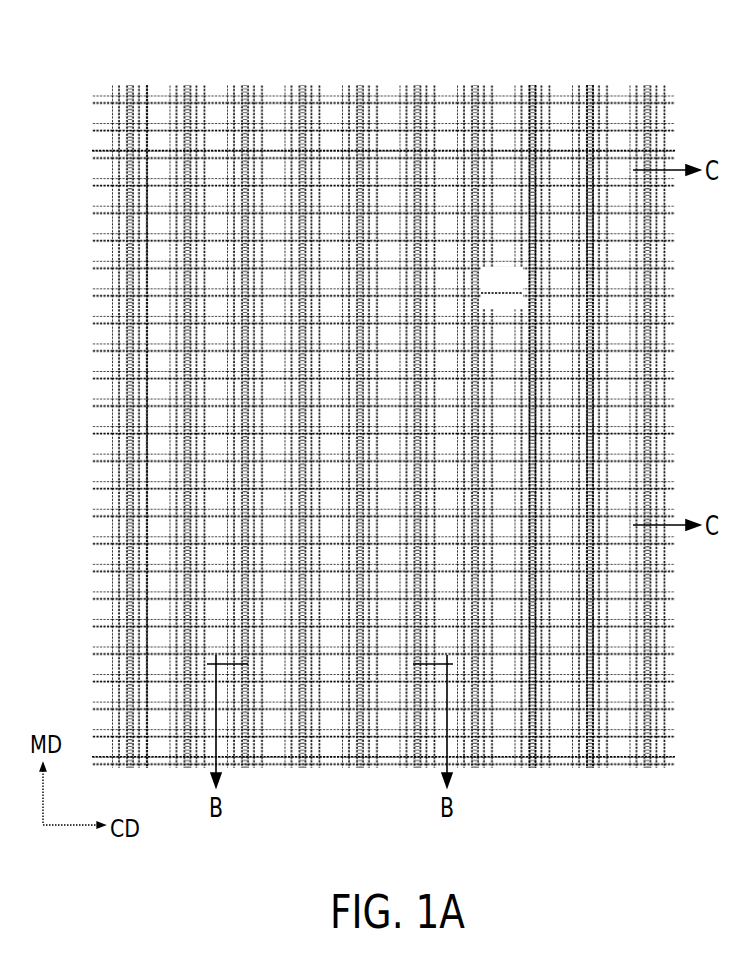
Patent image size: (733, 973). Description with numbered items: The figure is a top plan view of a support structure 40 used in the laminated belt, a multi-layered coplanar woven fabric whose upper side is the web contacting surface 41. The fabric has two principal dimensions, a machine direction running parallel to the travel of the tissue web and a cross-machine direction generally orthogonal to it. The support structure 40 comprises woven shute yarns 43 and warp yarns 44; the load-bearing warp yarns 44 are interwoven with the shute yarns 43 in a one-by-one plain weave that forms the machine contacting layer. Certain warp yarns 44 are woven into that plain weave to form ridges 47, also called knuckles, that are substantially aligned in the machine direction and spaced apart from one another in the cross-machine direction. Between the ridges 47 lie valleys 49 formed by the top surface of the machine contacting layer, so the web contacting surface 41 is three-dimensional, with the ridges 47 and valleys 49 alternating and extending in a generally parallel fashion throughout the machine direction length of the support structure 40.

The support structure 40 is at (73, 196).
The web contacting surface 41 is at (519, 303).
The shute yarns 43 is at (144, 740).
The warp yarns 44 is at (272, 758).
The ridge 47 is at (538, 85).
The valleys 49 is at (565, 153).